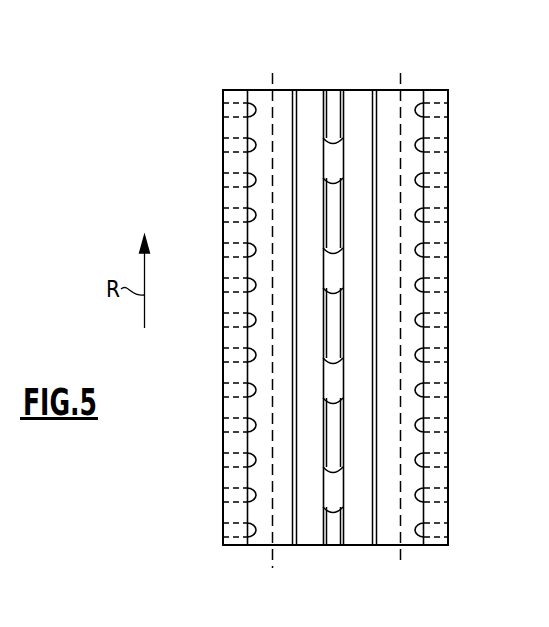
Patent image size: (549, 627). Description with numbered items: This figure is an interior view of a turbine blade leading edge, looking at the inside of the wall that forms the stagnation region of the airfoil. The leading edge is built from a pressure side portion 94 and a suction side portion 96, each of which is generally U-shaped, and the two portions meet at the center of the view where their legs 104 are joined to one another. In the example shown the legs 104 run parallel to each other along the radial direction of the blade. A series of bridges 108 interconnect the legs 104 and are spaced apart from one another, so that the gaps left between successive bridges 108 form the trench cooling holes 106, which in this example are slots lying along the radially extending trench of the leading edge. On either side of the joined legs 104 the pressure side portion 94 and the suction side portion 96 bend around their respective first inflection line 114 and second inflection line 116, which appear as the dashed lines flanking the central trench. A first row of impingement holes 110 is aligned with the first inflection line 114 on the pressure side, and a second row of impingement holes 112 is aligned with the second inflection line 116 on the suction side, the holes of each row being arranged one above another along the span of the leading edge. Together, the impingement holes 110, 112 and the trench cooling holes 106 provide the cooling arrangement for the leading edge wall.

The pressure side portion 94 is at (263, 523).
The suction side portion 96 is at (383, 538).
The legs 104 is at (313, 102).
The trench cooling holes 106 is at (327, 215).
The bridges 108 is at (337, 160).
The first row of impingement holes 110 is at (236, 90).
The second row of impingement holes 112 is at (434, 90).
The first inflection line 114 is at (272, 569).
The second inflection line 116 is at (400, 561).